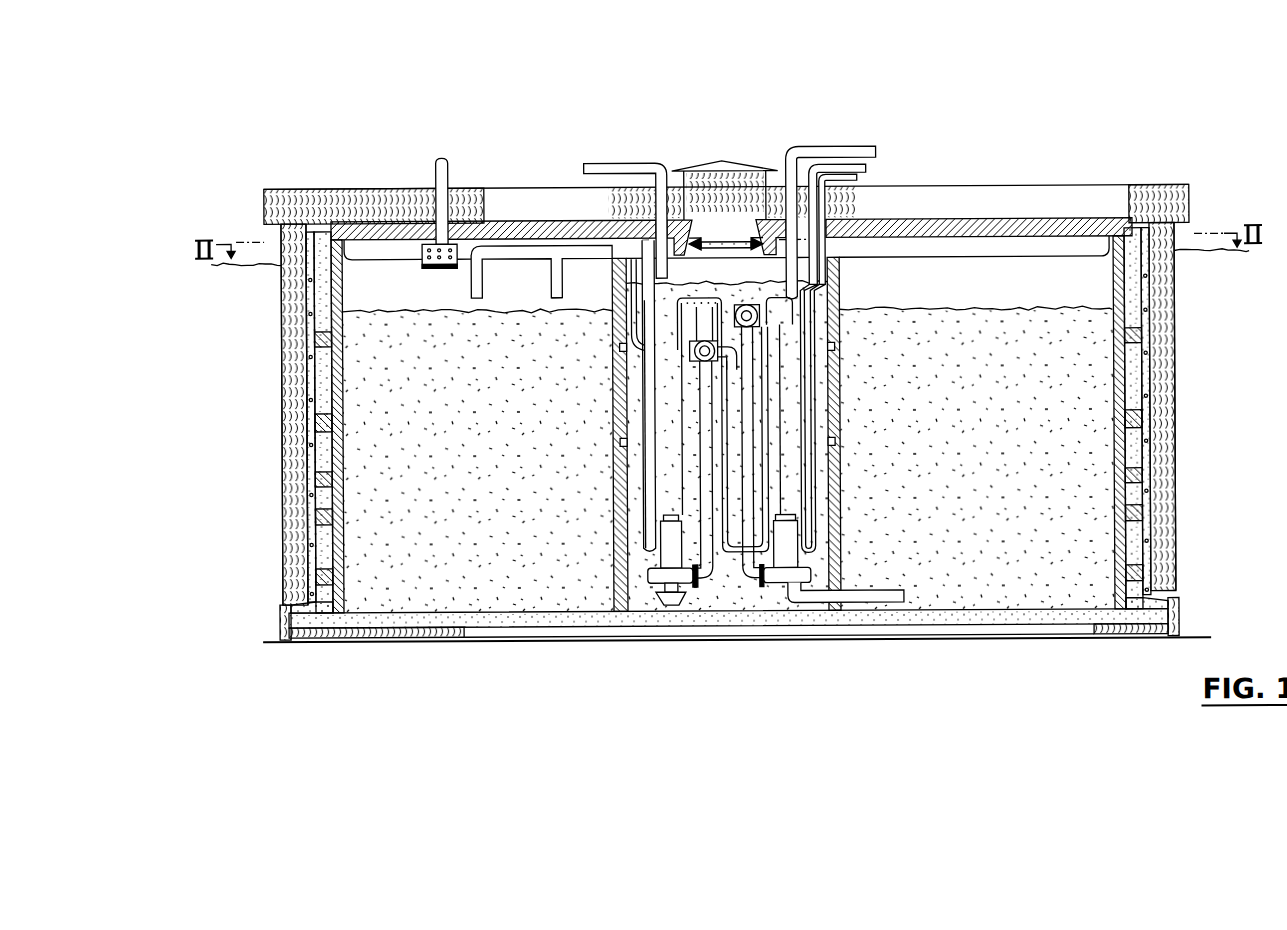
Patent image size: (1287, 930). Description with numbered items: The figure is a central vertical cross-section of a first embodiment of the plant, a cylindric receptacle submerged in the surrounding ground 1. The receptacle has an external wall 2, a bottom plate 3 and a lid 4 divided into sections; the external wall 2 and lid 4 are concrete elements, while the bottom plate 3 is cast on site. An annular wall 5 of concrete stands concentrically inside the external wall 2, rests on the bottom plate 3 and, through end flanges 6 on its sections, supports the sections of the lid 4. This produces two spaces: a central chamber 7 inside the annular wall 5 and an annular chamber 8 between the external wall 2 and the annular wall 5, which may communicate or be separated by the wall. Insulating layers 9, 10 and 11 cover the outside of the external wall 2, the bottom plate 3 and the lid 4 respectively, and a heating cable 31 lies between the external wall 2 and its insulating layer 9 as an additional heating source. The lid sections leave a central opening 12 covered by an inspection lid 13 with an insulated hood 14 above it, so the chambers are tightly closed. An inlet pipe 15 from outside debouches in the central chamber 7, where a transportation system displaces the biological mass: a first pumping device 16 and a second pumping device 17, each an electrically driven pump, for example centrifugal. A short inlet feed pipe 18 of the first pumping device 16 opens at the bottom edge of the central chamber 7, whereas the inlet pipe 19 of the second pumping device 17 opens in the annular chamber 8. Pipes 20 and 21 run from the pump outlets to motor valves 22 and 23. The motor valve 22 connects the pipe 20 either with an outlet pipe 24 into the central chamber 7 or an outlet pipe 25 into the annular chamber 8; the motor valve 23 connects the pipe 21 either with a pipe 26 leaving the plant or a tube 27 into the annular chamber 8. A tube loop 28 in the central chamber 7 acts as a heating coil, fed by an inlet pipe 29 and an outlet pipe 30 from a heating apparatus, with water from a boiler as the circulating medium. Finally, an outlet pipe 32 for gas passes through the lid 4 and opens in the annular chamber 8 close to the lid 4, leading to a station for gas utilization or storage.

The surrounding ground 1 is at (238, 272).
The external wall 2 is at (330, 193).
The bottom plate 3 is at (357, 640).
The lid 4 is at (370, 198).
The annular wall 5 is at (837, 292).
The end flanges 6 is at (940, 243).
The central chamber 7 is at (840, 307).
The annular chamber 8 is at (1135, 224).
The insulating layer 9 is at (1152, 262).
The insulating layer 10 is at (395, 636).
The insulating layer 11 is at (1177, 228).
The central opening 12 is at (705, 170).
The lid 13 is at (707, 222).
The insulated hood 14 is at (727, 240).
The inlet pipe 15 is at (605, 167).
The first pumping device 16 is at (660, 578).
The second pumping device 17 is at (793, 575).
The inlet feed pipe 18 is at (675, 606).
The inlet pipe 19 is at (870, 605).
The pipe 20 is at (700, 578).
The pipe 21 is at (752, 577).
The motor valve 22 is at (695, 351).
The motor valve 23 is at (757, 332).
The outlet pipe 24 is at (730, 370).
The outlet pipe 25 is at (467, 250).
The pipe 26 is at (813, 151).
The tube 27 is at (562, 273).
The tube loop 28 is at (645, 522).
The inlet pipe 29 is at (876, 165).
The outlet pipe 30 is at (858, 175).
The heating cable 31 is at (1148, 386).
The outlet pipe for gas 32 is at (437, 168).